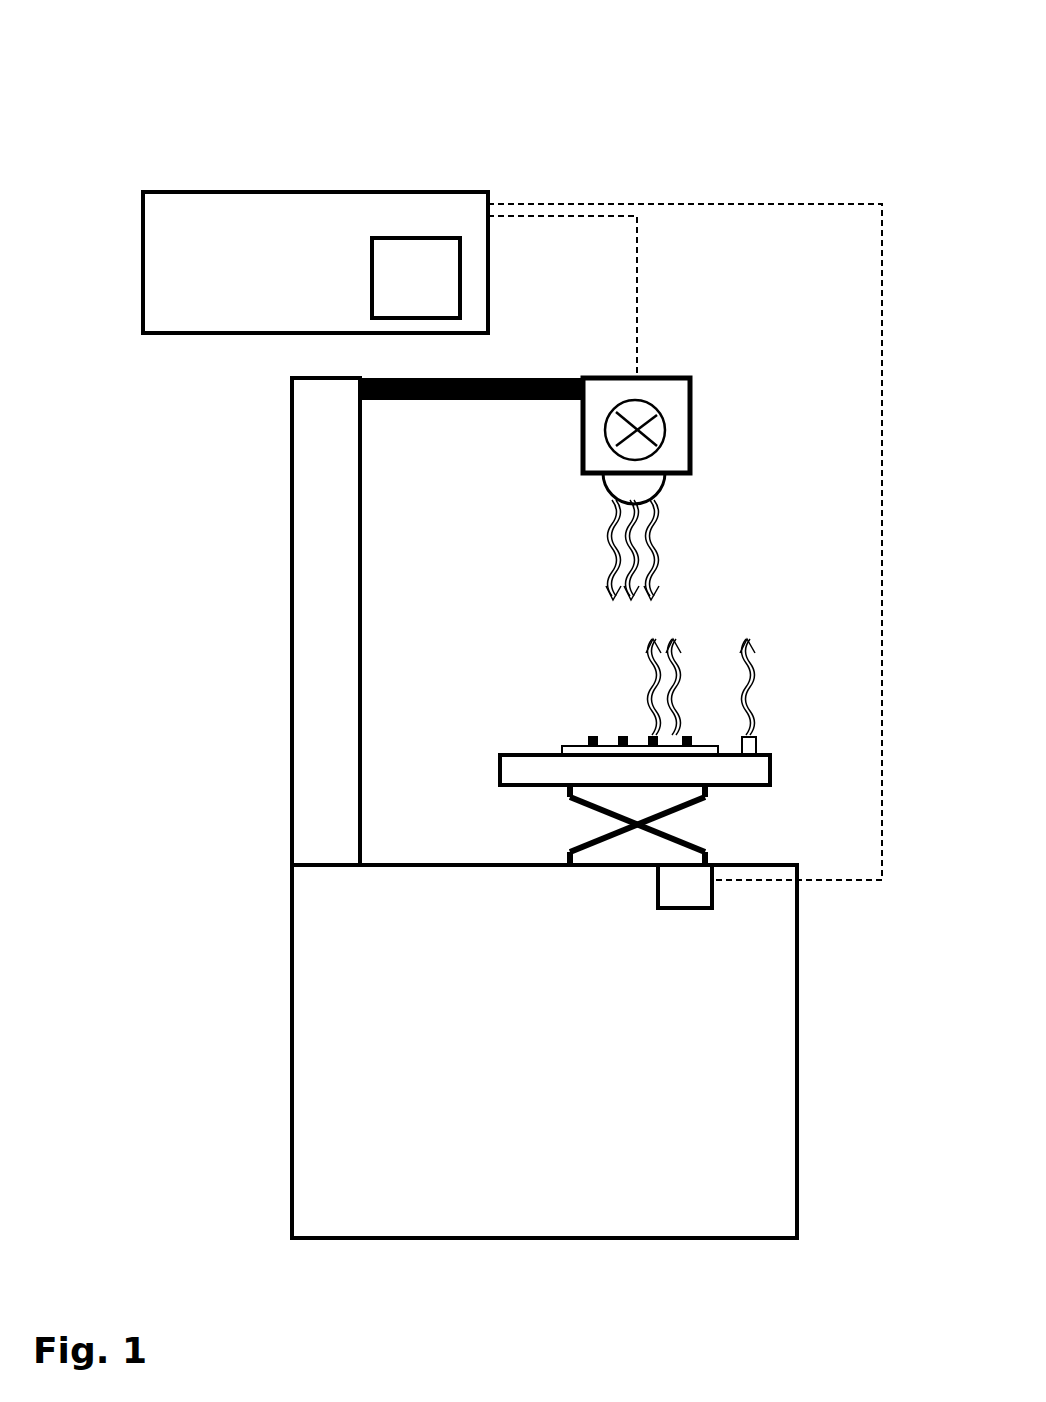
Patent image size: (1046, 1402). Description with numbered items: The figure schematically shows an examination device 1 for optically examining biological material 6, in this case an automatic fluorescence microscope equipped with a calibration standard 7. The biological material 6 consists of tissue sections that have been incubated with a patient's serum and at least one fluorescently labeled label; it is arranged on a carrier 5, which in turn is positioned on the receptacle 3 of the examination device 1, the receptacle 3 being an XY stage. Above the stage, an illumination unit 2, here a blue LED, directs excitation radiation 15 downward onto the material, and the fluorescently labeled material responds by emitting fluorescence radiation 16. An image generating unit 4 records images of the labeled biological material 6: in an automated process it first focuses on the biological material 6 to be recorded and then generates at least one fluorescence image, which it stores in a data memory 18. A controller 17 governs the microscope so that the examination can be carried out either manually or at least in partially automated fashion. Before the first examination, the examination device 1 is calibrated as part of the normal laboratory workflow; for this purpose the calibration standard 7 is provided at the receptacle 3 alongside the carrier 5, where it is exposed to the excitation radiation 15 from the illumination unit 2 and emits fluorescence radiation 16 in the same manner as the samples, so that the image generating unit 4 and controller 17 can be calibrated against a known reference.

The examination device 1 is at (196, 138).
The illumination unit 2 is at (647, 410).
The receptacle 3 is at (718, 767).
The image generating unit 4 is at (638, 484).
The carrier 5 is at (563, 746).
The biological material 6 is at (593, 735).
The calibration standard 7 is at (758, 730).
The excitation radiation 15 is at (660, 572).
The fluorescence radiation 16 is at (735, 663).
The controller 17 is at (512, 536).
The data memory 18 is at (416, 278).